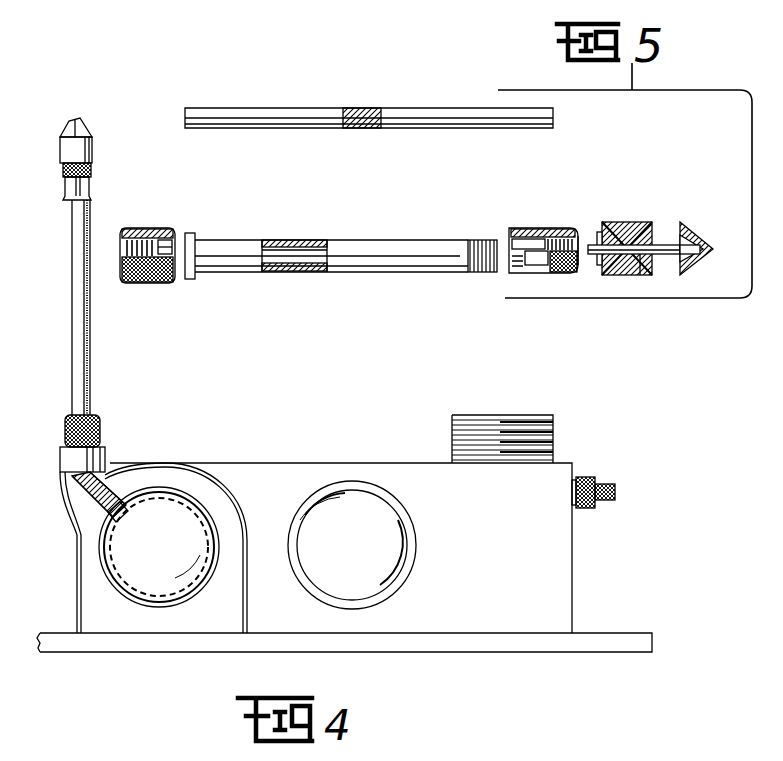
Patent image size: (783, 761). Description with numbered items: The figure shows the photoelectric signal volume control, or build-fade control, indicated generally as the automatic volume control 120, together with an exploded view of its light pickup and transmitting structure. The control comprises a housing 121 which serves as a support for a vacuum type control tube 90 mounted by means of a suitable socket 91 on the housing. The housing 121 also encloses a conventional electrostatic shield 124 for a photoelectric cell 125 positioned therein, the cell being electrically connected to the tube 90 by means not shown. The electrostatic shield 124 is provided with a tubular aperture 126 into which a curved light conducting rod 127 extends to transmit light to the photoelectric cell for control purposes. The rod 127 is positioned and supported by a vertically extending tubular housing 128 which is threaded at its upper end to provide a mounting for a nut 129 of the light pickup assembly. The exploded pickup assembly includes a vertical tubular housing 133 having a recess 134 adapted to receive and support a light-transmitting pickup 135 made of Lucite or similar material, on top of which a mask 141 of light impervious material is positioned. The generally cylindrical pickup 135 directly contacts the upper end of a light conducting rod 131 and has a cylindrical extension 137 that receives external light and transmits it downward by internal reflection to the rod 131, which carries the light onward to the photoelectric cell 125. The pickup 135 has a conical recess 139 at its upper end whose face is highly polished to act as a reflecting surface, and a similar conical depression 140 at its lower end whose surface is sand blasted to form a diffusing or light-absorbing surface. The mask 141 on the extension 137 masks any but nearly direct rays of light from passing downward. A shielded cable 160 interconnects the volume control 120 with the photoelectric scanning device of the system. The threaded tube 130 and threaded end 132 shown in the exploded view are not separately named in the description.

In FIG. 4, the vacuum type control tube 90 is at (375, 512).
In FIG. 4, the socket 91 is at (417, 538).
In FIG. 4, the automatic volume control 120 is at (345, 432).
In FIG. 4, the housing 121 is at (222, 463).
In FIG. 4, the electrostatic shield 124 is at (145, 594).
In FIG. 4, the photoelectric cell 125 is at (192, 493).
In FIG. 4, the tubular aperture 126 is at (108, 517).
In FIG. 4, the curved light conducting rod 127 is at (72, 505).
In FIG. 4, the vertically extending tubular housing 128 is at (65, 470).
In FIG. 4, the nut 129 is at (100, 430).
In FIG. 5, the nut 129 is at (152, 283).
In FIG. 4, the tube 130 is at (88, 366).
In FIG. 5, the tube 130 is at (311, 272).
In FIG. 5, the light conducting rod 131 is at (395, 108).
In FIG. 5, the threaded end 132 is at (485, 272).
In FIG. 4, the vertical tubular housing 133 is at (92, 186).
In FIG. 5, the vertical tubular housing 133 is at (538, 228).
In FIG. 5, the recess 134 is at (580, 236).
In FIG. 4, the light-transmitting pickup 135 is at (93, 150).
In FIG. 5, the light-transmitting pickup 135 is at (632, 228).
In FIG. 5, the cylindrical extension 137 is at (665, 255).
In FIG. 5, the conical recess 139 is at (652, 245).
In FIG. 5, the conical depression 140 is at (597, 255).
In FIG. 4, the mask 141 is at (92, 128).
In FIG. 5, the mask 141 is at (690, 262).
In FIG. 4, the shielded cable 160 is at (610, 485).